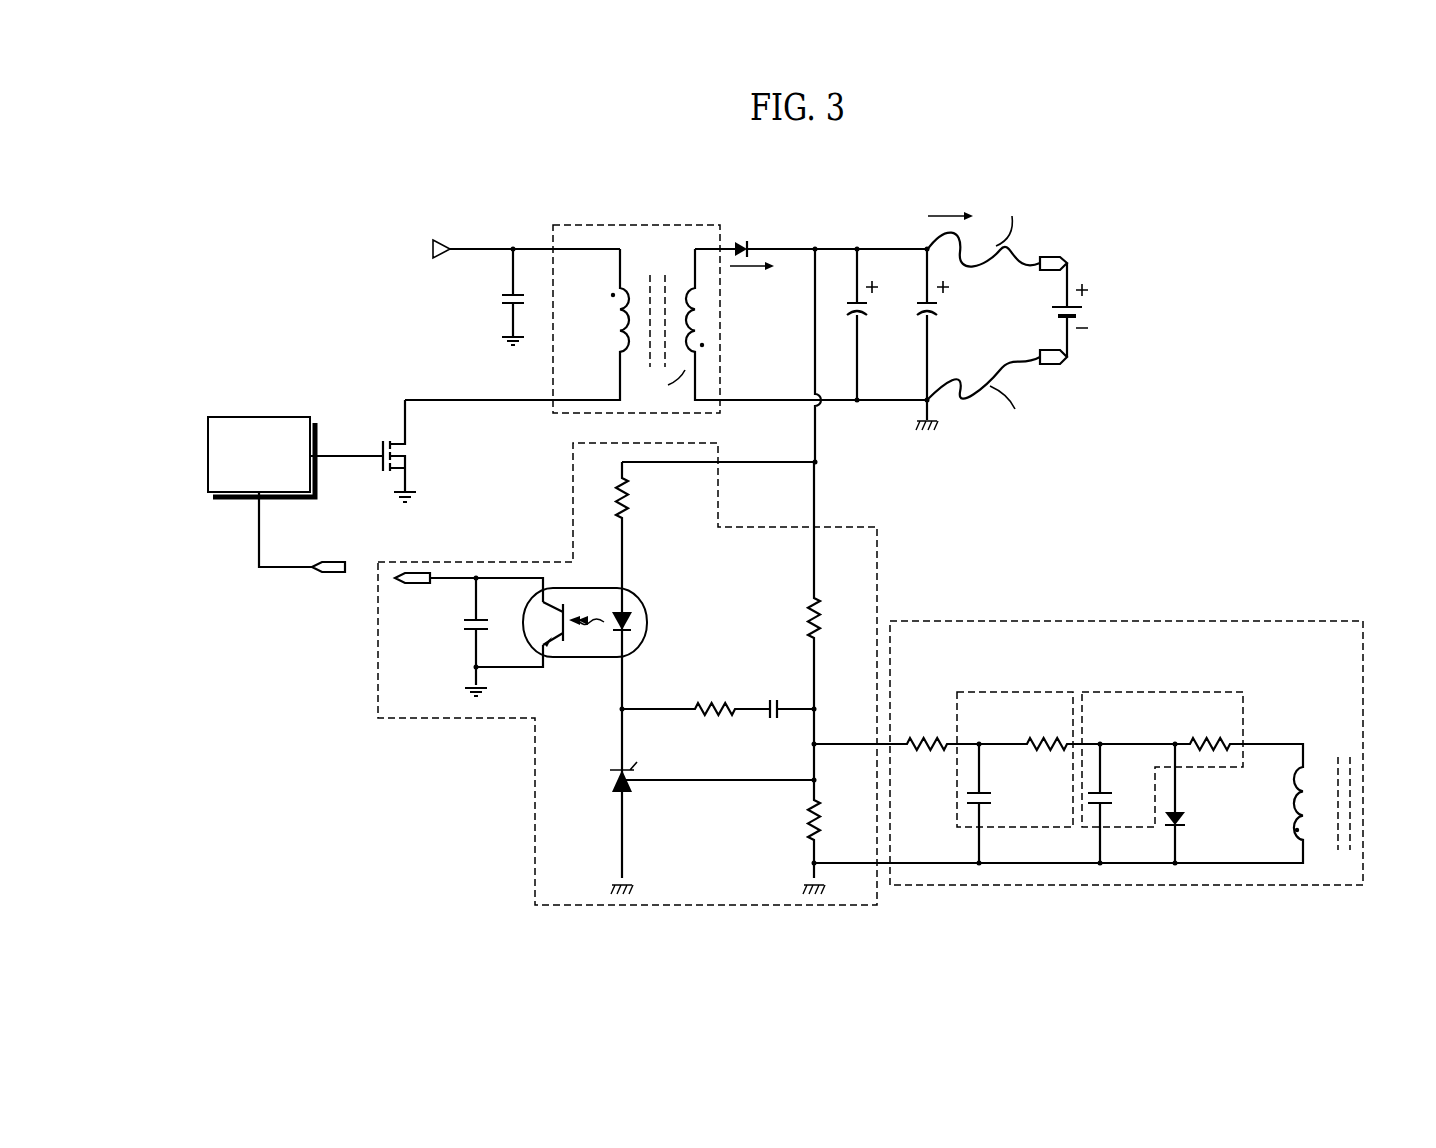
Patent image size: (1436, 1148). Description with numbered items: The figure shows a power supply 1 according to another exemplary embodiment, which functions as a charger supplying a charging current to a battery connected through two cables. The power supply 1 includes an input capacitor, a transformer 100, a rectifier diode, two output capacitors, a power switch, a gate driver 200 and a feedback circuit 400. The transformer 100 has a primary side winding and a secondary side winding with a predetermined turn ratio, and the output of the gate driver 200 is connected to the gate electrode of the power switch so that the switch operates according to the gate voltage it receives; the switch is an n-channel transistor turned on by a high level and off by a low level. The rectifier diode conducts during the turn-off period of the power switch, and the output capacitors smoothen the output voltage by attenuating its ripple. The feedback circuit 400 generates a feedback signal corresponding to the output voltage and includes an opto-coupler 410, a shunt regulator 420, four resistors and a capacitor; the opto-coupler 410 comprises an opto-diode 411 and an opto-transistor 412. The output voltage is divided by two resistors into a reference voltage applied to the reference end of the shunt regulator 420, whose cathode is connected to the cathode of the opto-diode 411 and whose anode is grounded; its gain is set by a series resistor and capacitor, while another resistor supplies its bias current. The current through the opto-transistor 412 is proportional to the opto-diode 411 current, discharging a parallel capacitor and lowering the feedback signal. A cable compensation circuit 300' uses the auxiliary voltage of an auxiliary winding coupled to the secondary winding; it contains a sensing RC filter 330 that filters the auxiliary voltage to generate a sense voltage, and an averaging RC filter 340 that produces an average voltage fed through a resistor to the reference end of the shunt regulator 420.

The power supply 1 is at (305, 196).
The transformer 100 is at (583, 225).
The gate driver 200 is at (287, 416).
The cable compensation circuit 300' is at (1088, 724).
The sensing RC filter 330 is at (1163, 692).
The averaging RC filter 340 is at (985, 692).
The feedback circuit 400 is at (420, 720).
The opto-coupler 410 is at (645, 598).
The opto-diode 411 is at (636, 624).
The opto-transistor 412 is at (556, 648).
The shunt regulator 420 is at (611, 786).